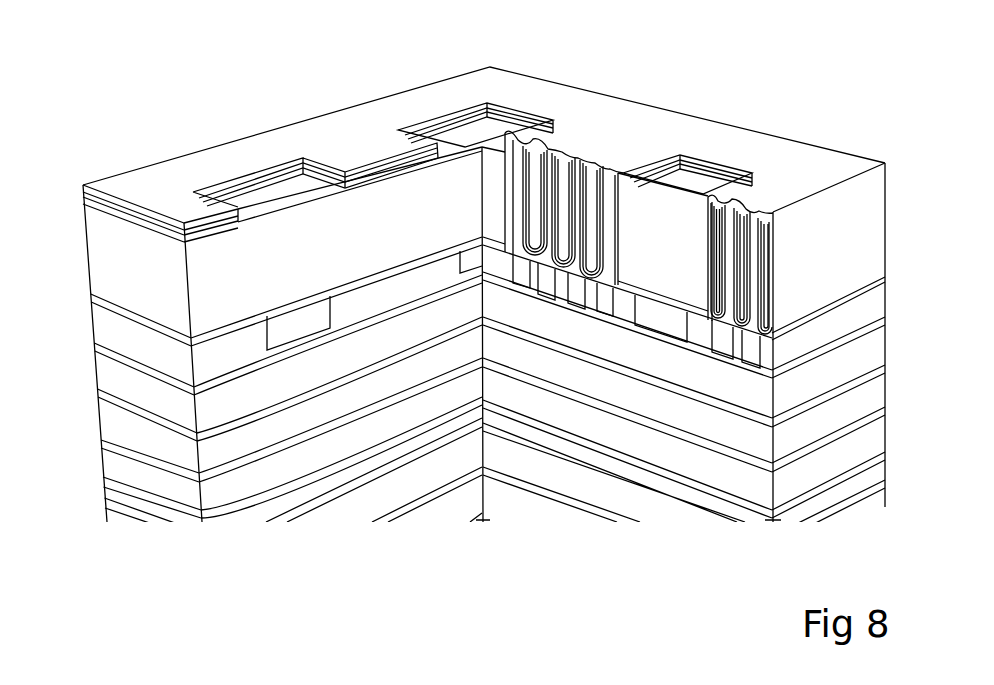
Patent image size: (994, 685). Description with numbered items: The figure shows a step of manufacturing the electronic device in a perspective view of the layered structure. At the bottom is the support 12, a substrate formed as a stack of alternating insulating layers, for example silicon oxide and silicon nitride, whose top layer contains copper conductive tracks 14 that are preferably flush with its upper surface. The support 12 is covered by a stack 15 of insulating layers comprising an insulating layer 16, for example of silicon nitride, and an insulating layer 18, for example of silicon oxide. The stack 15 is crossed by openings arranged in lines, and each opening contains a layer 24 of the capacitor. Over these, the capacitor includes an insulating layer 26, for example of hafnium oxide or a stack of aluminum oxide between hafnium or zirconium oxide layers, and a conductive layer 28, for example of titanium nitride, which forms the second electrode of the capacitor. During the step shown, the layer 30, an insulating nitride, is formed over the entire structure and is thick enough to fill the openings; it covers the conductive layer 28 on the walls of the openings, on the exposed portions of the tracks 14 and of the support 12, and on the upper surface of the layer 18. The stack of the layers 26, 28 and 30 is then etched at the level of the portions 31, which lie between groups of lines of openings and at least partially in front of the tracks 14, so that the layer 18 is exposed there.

The support 12 is at (97, 300).
The conductive tracks 14 is at (290, 328).
The stack of insulating layers 15 is at (80, 194).
The insulating layer 16 is at (103, 312).
The insulating layer 18 is at (102, 236).
The layers 24 is at (748, 336).
The insulating layer 26 is at (773, 285).
The conductive layer 28 is at (773, 266).
The layer 30 is at (753, 147).
The portions 31 is at (688, 191).